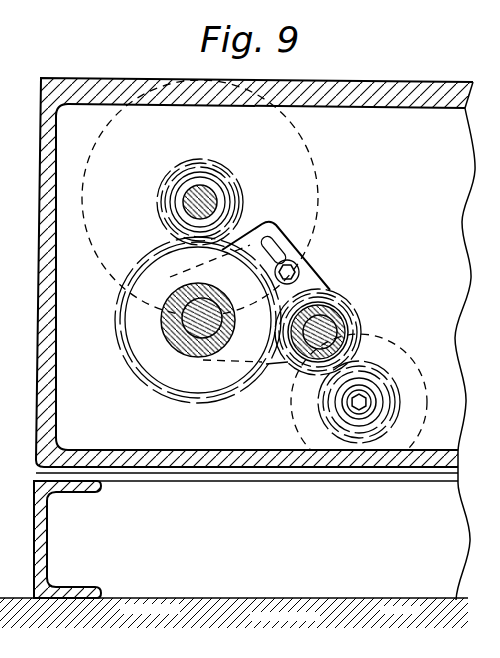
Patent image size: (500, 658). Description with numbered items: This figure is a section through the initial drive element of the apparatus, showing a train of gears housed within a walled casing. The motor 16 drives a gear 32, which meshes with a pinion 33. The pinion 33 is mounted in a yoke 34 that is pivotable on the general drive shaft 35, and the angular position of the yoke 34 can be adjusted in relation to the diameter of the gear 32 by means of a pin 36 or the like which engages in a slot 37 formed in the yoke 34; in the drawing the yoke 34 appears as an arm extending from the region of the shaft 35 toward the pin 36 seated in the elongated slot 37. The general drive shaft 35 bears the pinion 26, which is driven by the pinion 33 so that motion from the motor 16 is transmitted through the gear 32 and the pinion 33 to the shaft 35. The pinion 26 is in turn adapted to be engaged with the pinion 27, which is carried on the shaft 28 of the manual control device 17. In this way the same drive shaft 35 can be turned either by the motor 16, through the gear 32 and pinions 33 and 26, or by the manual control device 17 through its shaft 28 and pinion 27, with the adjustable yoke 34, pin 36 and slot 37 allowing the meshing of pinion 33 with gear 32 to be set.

The motor 16 is at (383, 337).
The manual control device 17 is at (303, 141).
The pinion 26 is at (148, 258).
The pinion 27 is at (226, 181).
The shaft 28 is at (192, 202).
The gear 32 is at (387, 367).
The pinion 33 is at (355, 307).
The yoke 34 is at (313, 280).
The general drive shaft 35 is at (200, 332).
The pin 36 is at (291, 270).
The slot 37 is at (278, 240).